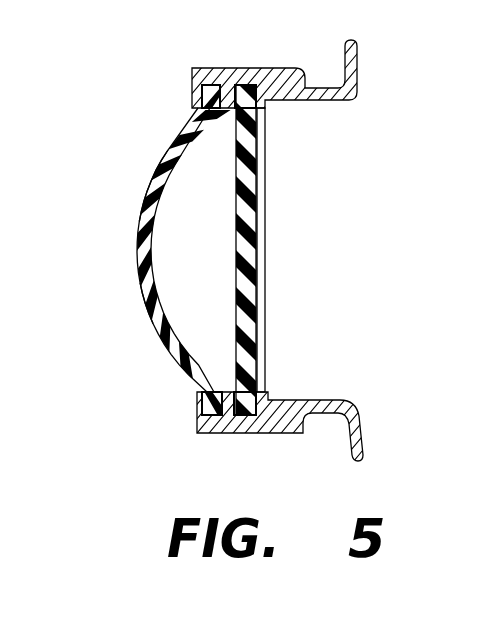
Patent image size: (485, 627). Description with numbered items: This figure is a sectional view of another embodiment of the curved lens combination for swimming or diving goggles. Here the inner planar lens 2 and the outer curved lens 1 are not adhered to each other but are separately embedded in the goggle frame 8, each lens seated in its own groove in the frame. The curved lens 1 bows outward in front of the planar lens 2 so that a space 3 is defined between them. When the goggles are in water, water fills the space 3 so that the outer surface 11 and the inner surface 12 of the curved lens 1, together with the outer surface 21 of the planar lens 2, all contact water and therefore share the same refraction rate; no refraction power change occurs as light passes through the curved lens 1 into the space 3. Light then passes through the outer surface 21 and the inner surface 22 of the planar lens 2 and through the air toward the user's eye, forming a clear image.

The goggle frame 8 is at (230, 66).
The space 3 is at (208, 173).
The outer curved lens 1 is at (143, 239).
The outer surface of the curved lens 11 is at (150, 189).
The inner surface of the curved lens 12 is at (142, 278).
The inner planar lens 2 is at (247, 210).
The outer surface of the planar lens 21 is at (240, 277).
The inner surface of the planar lens 22 is at (258, 322).